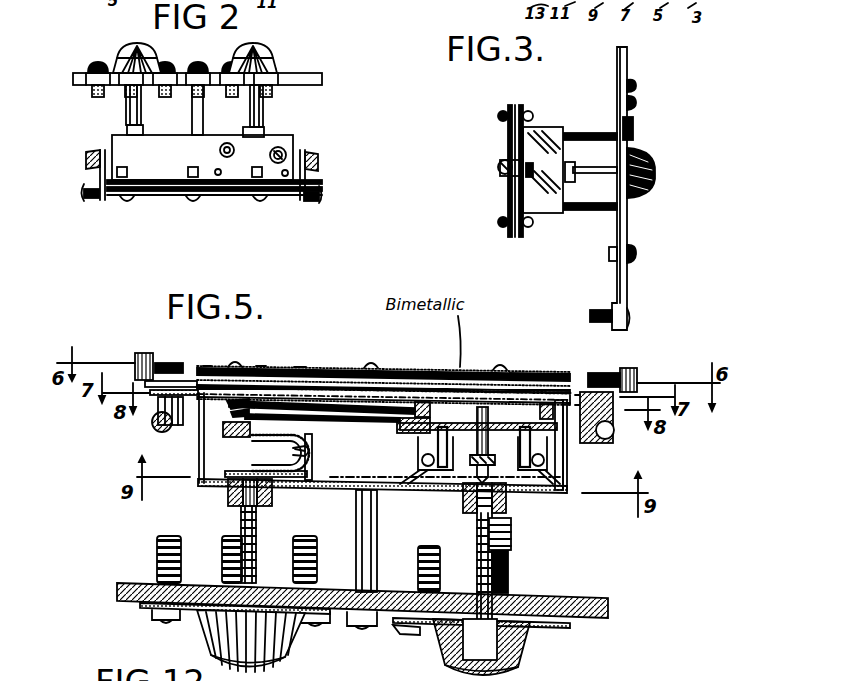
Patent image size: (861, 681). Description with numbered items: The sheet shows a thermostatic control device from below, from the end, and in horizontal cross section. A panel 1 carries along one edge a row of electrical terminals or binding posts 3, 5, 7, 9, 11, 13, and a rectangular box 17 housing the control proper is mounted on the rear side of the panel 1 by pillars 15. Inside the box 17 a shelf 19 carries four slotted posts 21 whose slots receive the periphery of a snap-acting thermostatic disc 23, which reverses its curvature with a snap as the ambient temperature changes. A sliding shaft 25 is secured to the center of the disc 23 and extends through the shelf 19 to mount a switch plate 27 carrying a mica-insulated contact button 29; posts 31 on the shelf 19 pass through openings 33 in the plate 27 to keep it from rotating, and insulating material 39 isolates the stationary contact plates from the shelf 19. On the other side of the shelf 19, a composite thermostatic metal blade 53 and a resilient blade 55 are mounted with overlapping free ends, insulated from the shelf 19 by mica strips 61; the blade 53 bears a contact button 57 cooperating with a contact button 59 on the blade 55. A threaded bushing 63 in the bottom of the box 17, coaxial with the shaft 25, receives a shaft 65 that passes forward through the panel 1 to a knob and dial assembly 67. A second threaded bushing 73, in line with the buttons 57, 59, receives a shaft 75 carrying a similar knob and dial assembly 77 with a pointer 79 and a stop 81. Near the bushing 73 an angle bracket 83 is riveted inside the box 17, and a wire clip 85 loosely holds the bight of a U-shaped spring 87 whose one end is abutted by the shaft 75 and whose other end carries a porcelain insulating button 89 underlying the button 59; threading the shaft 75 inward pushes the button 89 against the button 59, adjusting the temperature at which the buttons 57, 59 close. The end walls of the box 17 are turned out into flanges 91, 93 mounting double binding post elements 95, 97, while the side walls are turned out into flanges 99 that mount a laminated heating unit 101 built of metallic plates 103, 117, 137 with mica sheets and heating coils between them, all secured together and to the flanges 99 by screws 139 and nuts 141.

In FIG. 2, the panel 1 is at (322, 80).
In FIG. 3, the panel 1 is at (628, 62).
In FIG. 5, the panel 1 is at (128, 584).
In FIG. 2, the electrical terminal 3 is at (85, 83).
In FIG. 3, the electrical terminal 3 is at (619, 322).
In FIG. 5, the electrical terminal 3 is at (160, 616).
In FIG. 2, the electrical terminal 5 is at (126, 86).
In FIG. 5, the electrical terminal 5 is at (225, 564).
In FIG. 2, the electrical terminal 7 is at (168, 86).
In FIG. 5, the electrical terminal 7 is at (320, 620).
In FIG. 2, the electrical terminal 9 is at (193, 70).
In FIG. 5, the electrical terminal 9 is at (365, 624).
In FIG. 2, the electrical terminal 11 is at (228, 70).
In FIG. 5, the electrical terminal 11 is at (407, 630).
In FIG. 2, the electrical terminal 13 is at (286, 78).
In FIG. 5, the electrical terminal 13 is at (510, 590).
In FIG. 2, the pillar 15 is at (126, 112).
In FIG. 3, the pillar 15 is at (590, 132).
In FIG. 5, the pillar 15 is at (377, 532).
In FIG. 2, the box 17 is at (167, 197).
In FIG. 3, the box 17 is at (538, 213).
In FIG. 5, the box 17 is at (200, 486).
In FIG. 5, the shelf 19 is at (566, 440).
In FIG. 5, the slotted post 21 is at (426, 372).
In FIG. 5, the thermostatic disc 23 is at (522, 376).
In FIG. 5, the sliding shaft 25 is at (464, 376).
In FIG. 5, the switch plate 27 is at (478, 470).
In FIG. 5, the contact button 29 is at (490, 470).
In FIG. 5, the post 31 is at (440, 468).
In FIG. 5, the opening 33 is at (424, 471).
In FIG. 5, the insulating material 39 is at (405, 432).
In FIG. 5, the thermostatic metal blade 53 is at (300, 368).
In FIG. 5, the resilient blade 55 is at (322, 420).
In FIG. 5, the contact button 57 is at (262, 367).
In FIG. 5, the contact button 59 is at (228, 406).
In FIG. 5, the mica strip 61 is at (397, 424).
In FIG. 2, the threaded bushing 63 is at (264, 132).
In FIG. 5, the threaded bushing 63 is at (472, 514).
In FIG. 2, the shaft 65 is at (250, 110).
In FIG. 5, the shaft 65 is at (508, 570).
In FIG. 2, the knob and dial assembly 67 is at (268, 52).
In FIG. 5, the knob and dial assembly 67 is at (525, 655).
In FIG. 2, the threaded bushing 73 is at (143, 130).
In FIG. 5, the threaded bushing 73 is at (234, 507).
In FIG. 2, the shaft 75 is at (126, 122).
In FIG. 5, the shaft 75 is at (258, 546).
In FIG. 2, the knob and dial assembly 77 is at (122, 55).
In FIG. 3, the knob and dial assembly 77 is at (650, 193).
In FIG. 5, the knob and dial assembly 77 is at (284, 634).
In FIG. 3, the pointer 79 is at (634, 120).
In FIG. 3, the stop 81 is at (635, 128).
In FIG. 5, the angle bracket 83 is at (308, 481).
In FIG. 5, the wire clip 85 is at (292, 456).
In FIG. 5, the U-shaped spring 87 is at (272, 452).
In FIG. 5, the insulating button 89 is at (230, 438).
In FIG. 2, the flange 91 is at (88, 176).
In FIG. 3, the flange 91 is at (506, 182).
In FIG. 5, the flange 91 is at (158, 412).
In FIG. 2, the flange 93 is at (322, 186).
In FIG. 5, the flange 93 is at (613, 425).
In FIG. 2, the double binding post element 95 is at (86, 199).
In FIG. 3, the double binding post element 95 is at (500, 165).
In FIG. 5, the double binding post element 95 is at (141, 355).
In FIG. 2, the double binding post element 97 is at (312, 202).
In FIG. 5, the double binding post element 97 is at (633, 370).
In FIG. 2, the flange 99 is at (160, 180).
In FIG. 3, the flange 99 is at (512, 107).
In FIG. 5, the flange 99 is at (341, 366).
In FIG. 2, the heating unit 101 is at (215, 196).
In FIG. 3, the heating unit 101 is at (507, 205).
In FIG. 5, the heating unit 101 is at (354, 368).
In FIG. 5, the metallic plate 103 is at (322, 407).
In FIG. 5, the metallic plate 117 is at (208, 366).
In FIG. 5, the metallic plate 137 is at (402, 368).
In FIG. 2, the screw 139 is at (127, 204).
In FIG. 3, the screw 139 is at (499, 113).
In FIG. 5, the screw 139 is at (240, 362).
In FIG. 2, the nut 141 is at (123, 167).
In FIG. 3, the nut 141 is at (532, 114).